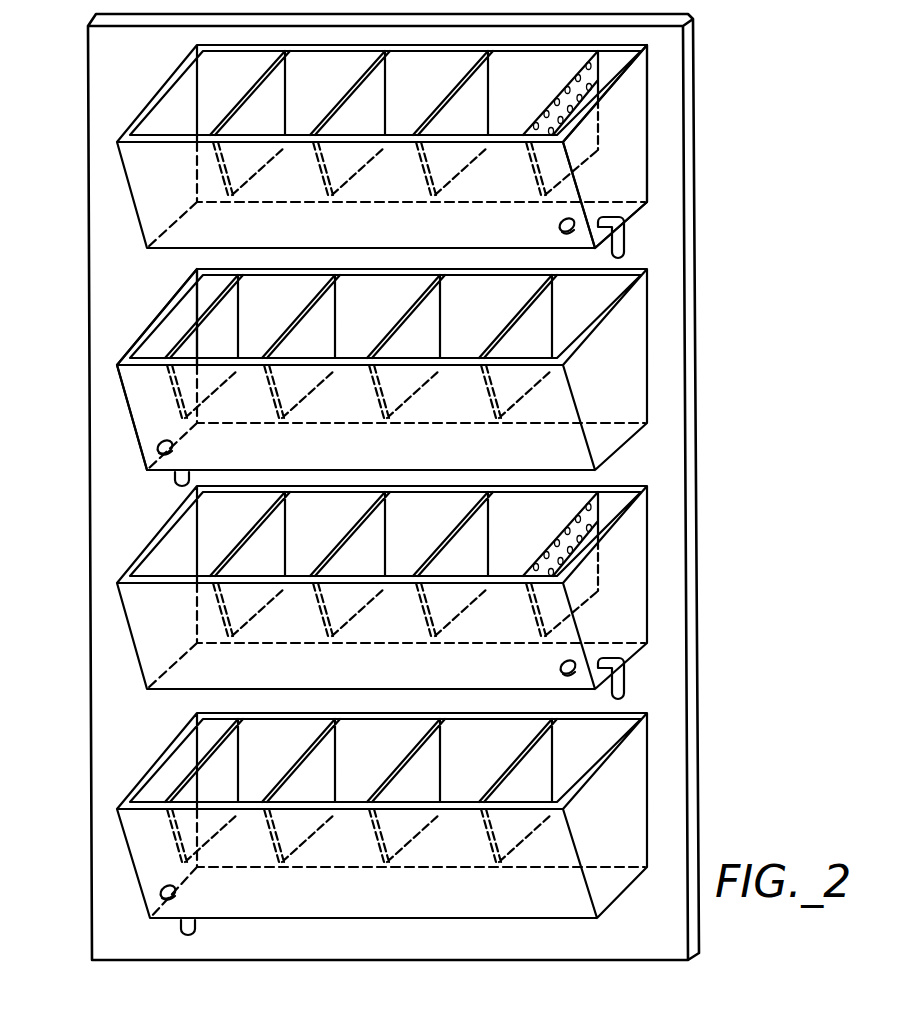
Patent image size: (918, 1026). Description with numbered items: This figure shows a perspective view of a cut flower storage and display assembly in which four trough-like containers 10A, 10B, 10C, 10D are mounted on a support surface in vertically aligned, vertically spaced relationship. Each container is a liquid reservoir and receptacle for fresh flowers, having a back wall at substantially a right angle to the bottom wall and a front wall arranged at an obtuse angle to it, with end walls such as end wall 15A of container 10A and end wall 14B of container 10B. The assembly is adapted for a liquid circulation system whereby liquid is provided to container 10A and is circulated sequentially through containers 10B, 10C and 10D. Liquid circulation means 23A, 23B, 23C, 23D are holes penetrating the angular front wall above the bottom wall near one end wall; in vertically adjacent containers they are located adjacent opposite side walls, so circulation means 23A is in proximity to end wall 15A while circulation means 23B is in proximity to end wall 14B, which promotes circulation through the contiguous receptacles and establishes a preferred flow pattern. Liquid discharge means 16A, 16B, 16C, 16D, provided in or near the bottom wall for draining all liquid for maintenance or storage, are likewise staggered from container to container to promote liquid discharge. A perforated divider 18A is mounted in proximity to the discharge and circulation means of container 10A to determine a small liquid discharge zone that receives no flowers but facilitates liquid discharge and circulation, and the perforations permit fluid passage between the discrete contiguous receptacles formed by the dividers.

The container 10A is at (442, 134).
The container 10B is at (391, 406).
The container 10C is at (439, 613).
The container 10D is at (404, 824).
The end wall 14B is at (114, 369).
The end wall 15A is at (638, 104).
The liquid discharge means 16A is at (625, 256).
The liquid discharge means 16B is at (181, 484).
The liquid discharge means 16C is at (627, 682).
The liquid discharge means 16D is at (182, 931).
The perforated divider 18A is at (588, 59).
The liquid circulation means 23A is at (578, 216).
The liquid circulation means 23B is at (158, 452).
The liquid circulation means 23C is at (576, 660).
The liquid circulation means 23D is at (161, 888).